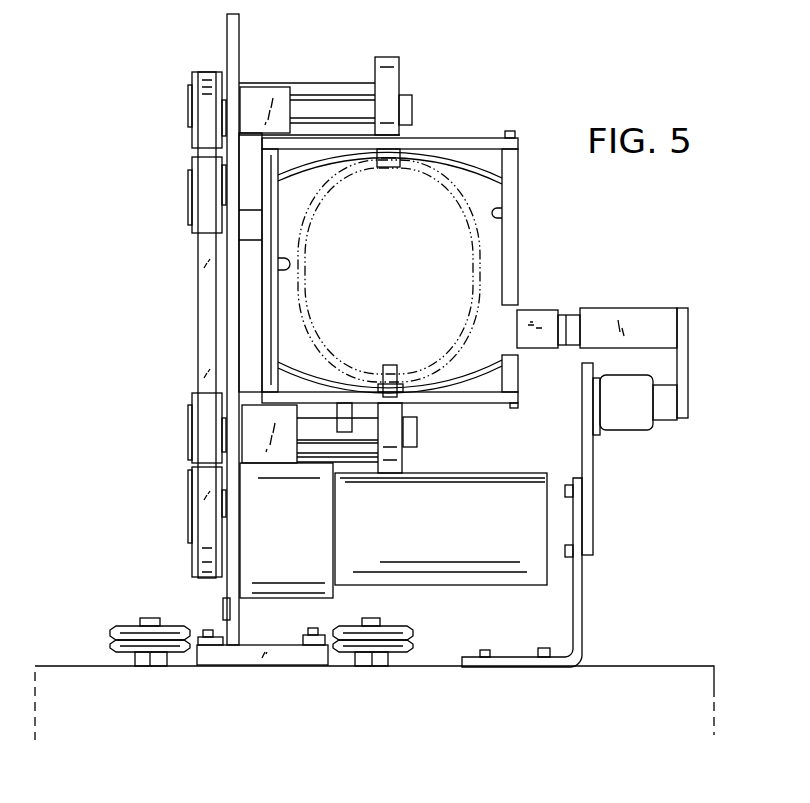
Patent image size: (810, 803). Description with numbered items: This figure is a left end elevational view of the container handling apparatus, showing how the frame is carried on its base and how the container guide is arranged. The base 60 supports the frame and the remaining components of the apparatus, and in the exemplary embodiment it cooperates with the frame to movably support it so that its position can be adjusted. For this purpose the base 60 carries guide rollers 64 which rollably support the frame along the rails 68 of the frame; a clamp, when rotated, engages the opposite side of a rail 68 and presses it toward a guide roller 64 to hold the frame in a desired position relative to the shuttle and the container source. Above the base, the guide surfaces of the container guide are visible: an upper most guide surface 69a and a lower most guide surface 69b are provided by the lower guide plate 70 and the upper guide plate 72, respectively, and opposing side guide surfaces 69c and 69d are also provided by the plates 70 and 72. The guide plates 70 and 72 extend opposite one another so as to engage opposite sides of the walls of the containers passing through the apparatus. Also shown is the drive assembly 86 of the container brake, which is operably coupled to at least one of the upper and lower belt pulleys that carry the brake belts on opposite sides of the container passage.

The base 60 is at (657, 665).
The guide rollers 64 is at (135, 625).
The rails 68 is at (192, 660).
The upper most guide surface 69a is at (426, 165).
The lower most guide surface 69b is at (428, 392).
The side guide surface 69c is at (505, 214).
The side guide surface 69d is at (280, 257).
The lower guide plate 70 is at (440, 392).
The upper guide plate 72 is at (437, 148).
The drive assembly 86 is at (172, 330).